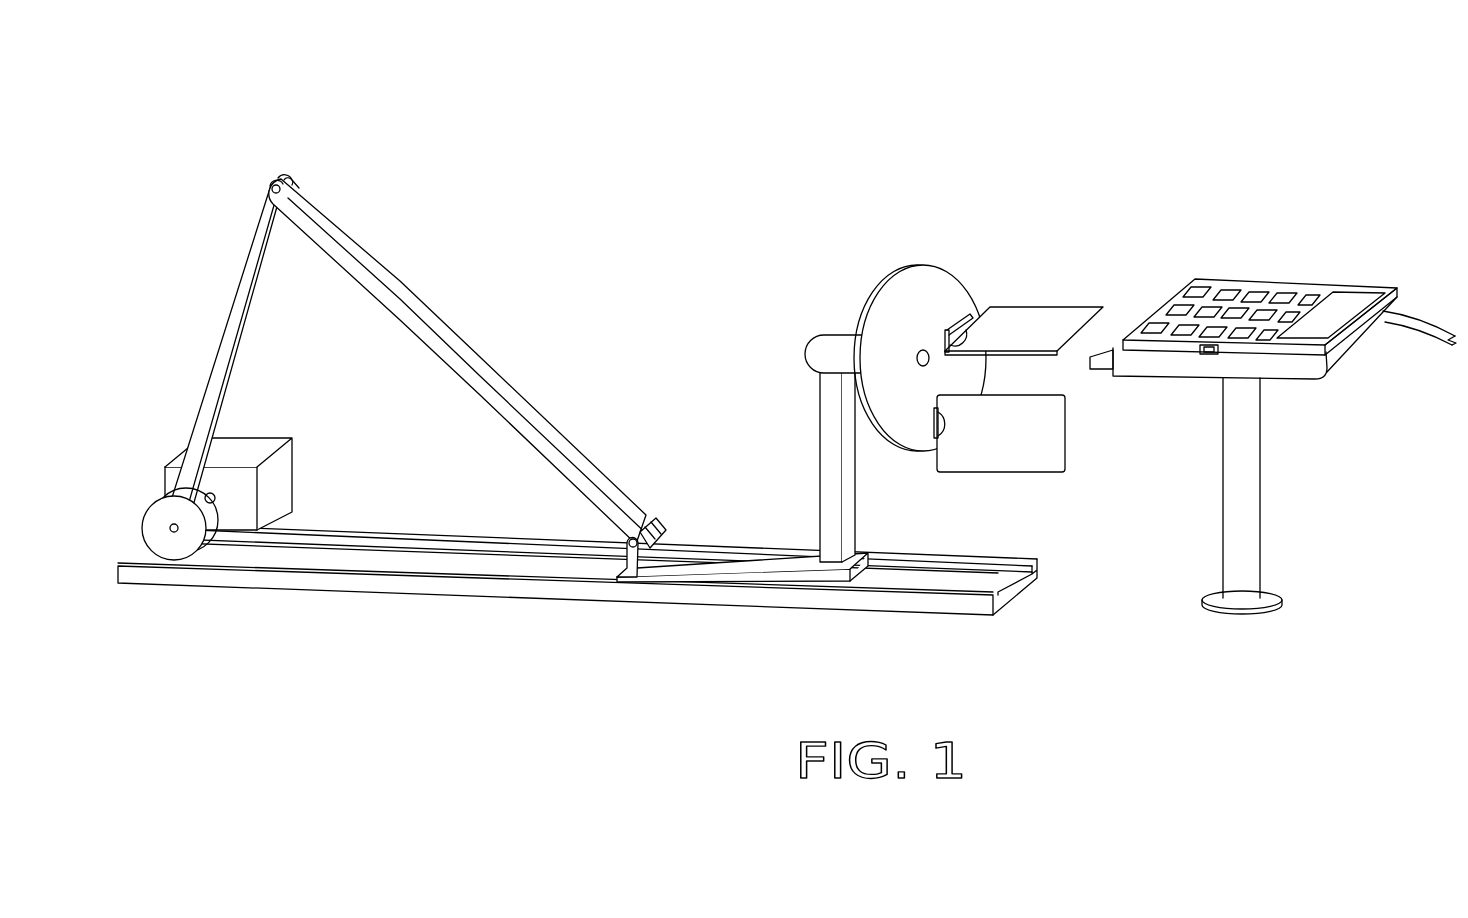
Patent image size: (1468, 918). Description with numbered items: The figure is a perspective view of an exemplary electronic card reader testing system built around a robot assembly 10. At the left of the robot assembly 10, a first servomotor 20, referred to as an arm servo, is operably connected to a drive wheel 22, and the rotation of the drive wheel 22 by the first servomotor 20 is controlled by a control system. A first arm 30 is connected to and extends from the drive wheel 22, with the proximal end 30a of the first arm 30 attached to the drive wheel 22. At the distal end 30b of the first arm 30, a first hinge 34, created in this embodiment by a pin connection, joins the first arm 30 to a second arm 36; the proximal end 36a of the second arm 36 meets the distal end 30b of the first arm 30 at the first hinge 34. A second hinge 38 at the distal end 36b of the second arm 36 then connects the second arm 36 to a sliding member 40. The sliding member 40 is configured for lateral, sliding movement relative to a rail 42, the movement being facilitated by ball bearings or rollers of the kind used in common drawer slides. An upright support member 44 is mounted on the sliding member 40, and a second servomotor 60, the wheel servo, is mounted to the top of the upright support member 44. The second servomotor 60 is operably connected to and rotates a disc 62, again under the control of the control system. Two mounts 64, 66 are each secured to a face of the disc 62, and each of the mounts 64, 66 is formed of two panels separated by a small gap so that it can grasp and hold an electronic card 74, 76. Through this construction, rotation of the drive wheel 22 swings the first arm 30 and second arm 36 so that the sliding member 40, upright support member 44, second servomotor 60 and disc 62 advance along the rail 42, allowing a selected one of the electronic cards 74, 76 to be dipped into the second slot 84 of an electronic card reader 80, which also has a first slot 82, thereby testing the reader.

The robot assembly 10 is at (146, 140).
The first servomotor 20 is at (182, 451).
The drive wheel 22 is at (165, 538).
The first arm 30 is at (243, 338).
The proximal end of the first arm 30a is at (172, 493).
The distal end of the first arm 30b is at (272, 182).
The first hinge 34 is at (288, 178).
The second arm 36 is at (447, 332).
The proximal end of the second arm 36a is at (297, 187).
The distal end of the second arm 36b is at (648, 520).
The second hinge 38 is at (662, 530).
The sliding member 40 is at (685, 573).
The rail 42 is at (373, 582).
The upright support member 44 is at (815, 455).
The second servomotor 60 is at (838, 335).
The disc 62 is at (919, 280).
The mount 64 is at (968, 310).
The mount 66 is at (930, 430).
The electronic card 74 is at (1012, 317).
The electronic card 76 is at (1040, 453).
The electronic card reader 80 is at (1342, 287).
The first slot 82 is at (1333, 375).
The second slot 84 is at (1112, 350).